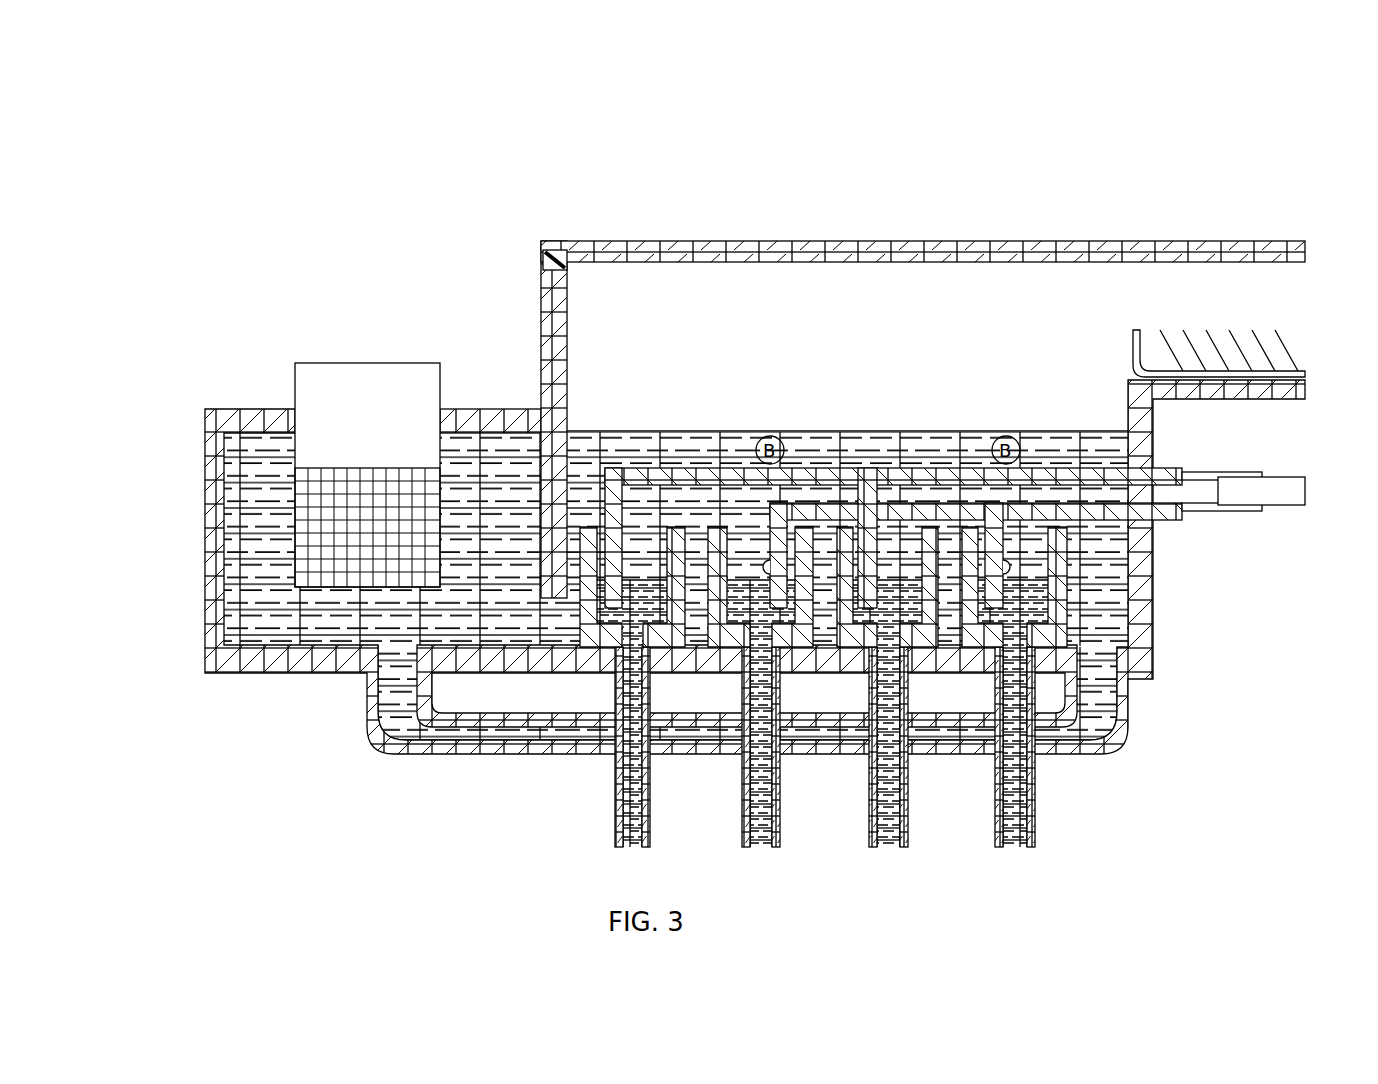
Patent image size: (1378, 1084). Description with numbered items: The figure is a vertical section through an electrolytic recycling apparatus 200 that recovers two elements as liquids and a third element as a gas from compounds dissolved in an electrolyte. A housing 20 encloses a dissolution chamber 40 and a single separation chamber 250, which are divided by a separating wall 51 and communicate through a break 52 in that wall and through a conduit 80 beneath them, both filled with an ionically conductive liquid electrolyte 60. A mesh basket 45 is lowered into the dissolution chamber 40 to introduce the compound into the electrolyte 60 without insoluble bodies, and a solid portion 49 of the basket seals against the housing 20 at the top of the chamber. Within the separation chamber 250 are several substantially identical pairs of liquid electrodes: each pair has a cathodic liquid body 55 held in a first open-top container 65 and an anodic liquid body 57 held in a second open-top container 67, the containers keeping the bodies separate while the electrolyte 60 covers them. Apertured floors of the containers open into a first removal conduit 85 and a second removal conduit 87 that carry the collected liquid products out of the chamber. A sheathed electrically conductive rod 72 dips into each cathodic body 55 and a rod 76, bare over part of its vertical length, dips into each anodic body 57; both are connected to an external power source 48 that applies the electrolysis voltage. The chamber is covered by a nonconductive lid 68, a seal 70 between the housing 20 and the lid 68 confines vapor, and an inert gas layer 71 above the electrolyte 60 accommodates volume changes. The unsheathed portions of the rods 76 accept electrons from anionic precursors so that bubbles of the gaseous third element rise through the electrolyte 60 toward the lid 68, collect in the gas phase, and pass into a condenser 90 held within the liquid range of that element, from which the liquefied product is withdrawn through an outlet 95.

The electrolytic recycling apparatus 200 is at (162, 162).
The separation chamber 250 is at (532, 180).
The dissolution chamber 40 is at (150, 395).
The housing 20 is at (203, 640).
The mesh basket 45 is at (317, 550).
The external power source 48 is at (1298, 475).
The solid portion 49 is at (323, 373).
The separating wall 51 is at (533, 477).
The break 52 is at (550, 622).
The cathodic liquid body 55 is at (605, 618).
The anodic liquid body 57 is at (747, 618).
The liquid electrolyte 60 is at (235, 527).
The first open-top container 65 is at (610, 643).
The second open-top container 67 is at (743, 643).
The nonconductive lid 68 is at (630, 242).
The seal 70 is at (543, 263).
The inert gas layer 71 is at (723, 282).
The electrically conductive rod 72 is at (605, 525).
The electrically conductive rod 76 is at (768, 523).
The conduit 80 is at (442, 752).
The first removal conduit 85 is at (650, 825).
The second removal conduit 87 is at (778, 825).
The condenser 90 is at (1157, 360).
The outlet 95 is at (1262, 292).